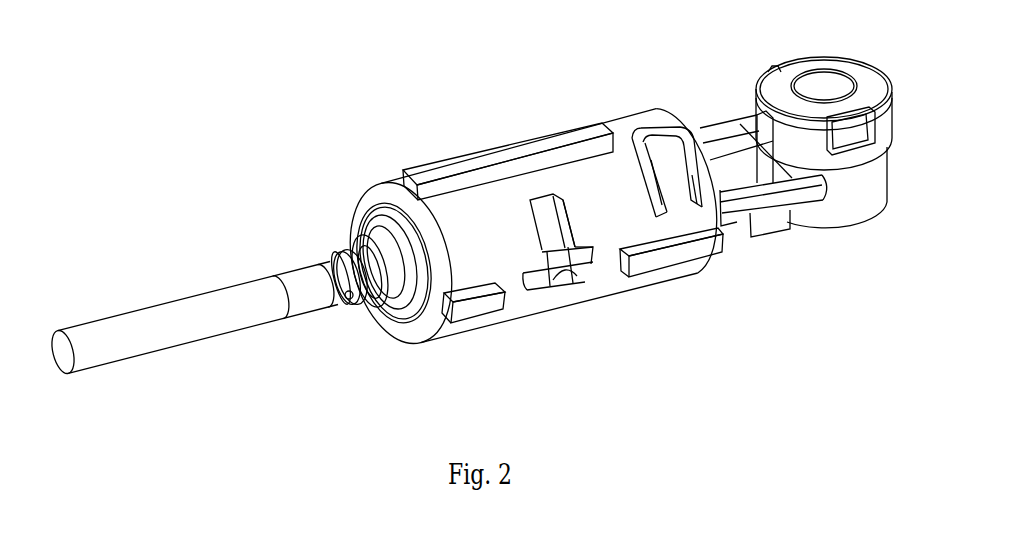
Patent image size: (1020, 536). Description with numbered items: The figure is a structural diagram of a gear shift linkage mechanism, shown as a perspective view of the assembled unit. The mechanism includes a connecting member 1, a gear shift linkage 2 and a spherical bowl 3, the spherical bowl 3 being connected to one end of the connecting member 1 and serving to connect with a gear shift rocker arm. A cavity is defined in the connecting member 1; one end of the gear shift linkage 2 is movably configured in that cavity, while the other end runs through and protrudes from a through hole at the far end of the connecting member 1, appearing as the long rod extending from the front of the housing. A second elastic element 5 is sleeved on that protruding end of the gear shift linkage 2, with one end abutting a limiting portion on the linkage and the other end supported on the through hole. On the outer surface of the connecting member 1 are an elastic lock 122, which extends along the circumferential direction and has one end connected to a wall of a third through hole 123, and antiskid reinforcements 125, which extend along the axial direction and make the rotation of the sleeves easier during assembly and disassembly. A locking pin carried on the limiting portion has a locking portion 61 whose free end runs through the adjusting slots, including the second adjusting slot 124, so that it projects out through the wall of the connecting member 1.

The connecting member 1 is at (512, 308).
The gear shift linkage 2 is at (233, 320).
The spherical bowl 3 is at (853, 200).
The second elastic element 5 is at (340, 300).
The locking portion 61 is at (557, 277).
The elastic lock 122 is at (657, 150).
The third through hole 123 is at (633, 138).
The second adjusting slot 124 is at (573, 243).
The antiskid reinforcements 125 is at (455, 172).